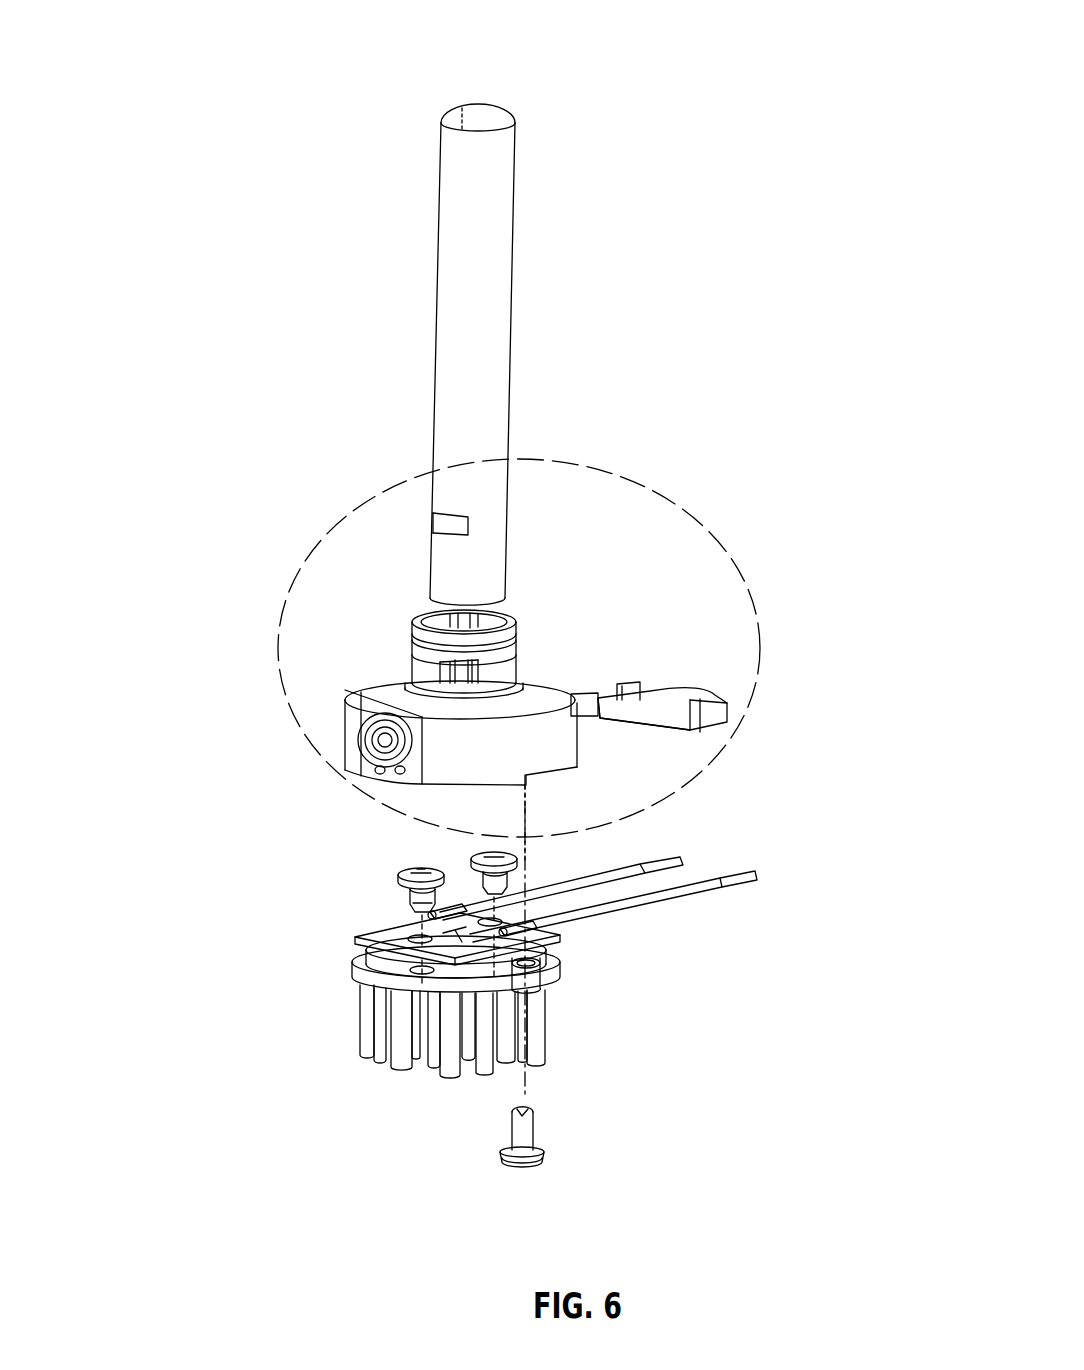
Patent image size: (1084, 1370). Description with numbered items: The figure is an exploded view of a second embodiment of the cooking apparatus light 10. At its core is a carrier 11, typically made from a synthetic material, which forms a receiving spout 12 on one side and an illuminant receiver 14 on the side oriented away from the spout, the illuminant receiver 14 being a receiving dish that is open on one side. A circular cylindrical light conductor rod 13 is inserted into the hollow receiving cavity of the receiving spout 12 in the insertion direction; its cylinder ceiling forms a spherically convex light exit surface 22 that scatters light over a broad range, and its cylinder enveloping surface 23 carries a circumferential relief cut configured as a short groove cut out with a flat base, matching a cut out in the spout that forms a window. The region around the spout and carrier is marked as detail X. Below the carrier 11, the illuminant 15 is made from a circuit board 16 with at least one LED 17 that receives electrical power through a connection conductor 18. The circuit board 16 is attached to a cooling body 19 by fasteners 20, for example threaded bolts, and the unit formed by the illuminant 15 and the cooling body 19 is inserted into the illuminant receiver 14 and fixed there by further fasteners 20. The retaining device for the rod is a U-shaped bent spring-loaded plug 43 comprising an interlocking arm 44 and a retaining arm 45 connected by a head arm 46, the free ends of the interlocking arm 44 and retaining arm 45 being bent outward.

The cooking apparatus light 10 is at (692, 278).
The carrier 11 is at (590, 736).
The receiving spout 12 is at (527, 640).
The light conductor rod 13 is at (542, 238).
The illuminant receiver 14 is at (563, 773).
The illuminant 15 is at (550, 992).
The circuit board 16 is at (450, 940).
The LED 17 is at (475, 942).
The connection conductor 18 is at (615, 910).
The cooling body 19 is at (560, 1052).
The fasteners 20 is at (375, 865).
The light exit surface 22 is at (462, 105).
The cylinder enveloping surface 23 is at (485, 172).
The spring-loaded plug 43 is at (692, 682).
The interlocking arm 44 is at (713, 697).
The retaining arm 45 is at (673, 722).
The head arm 46 is at (737, 718).
The detail region X is at (657, 495).